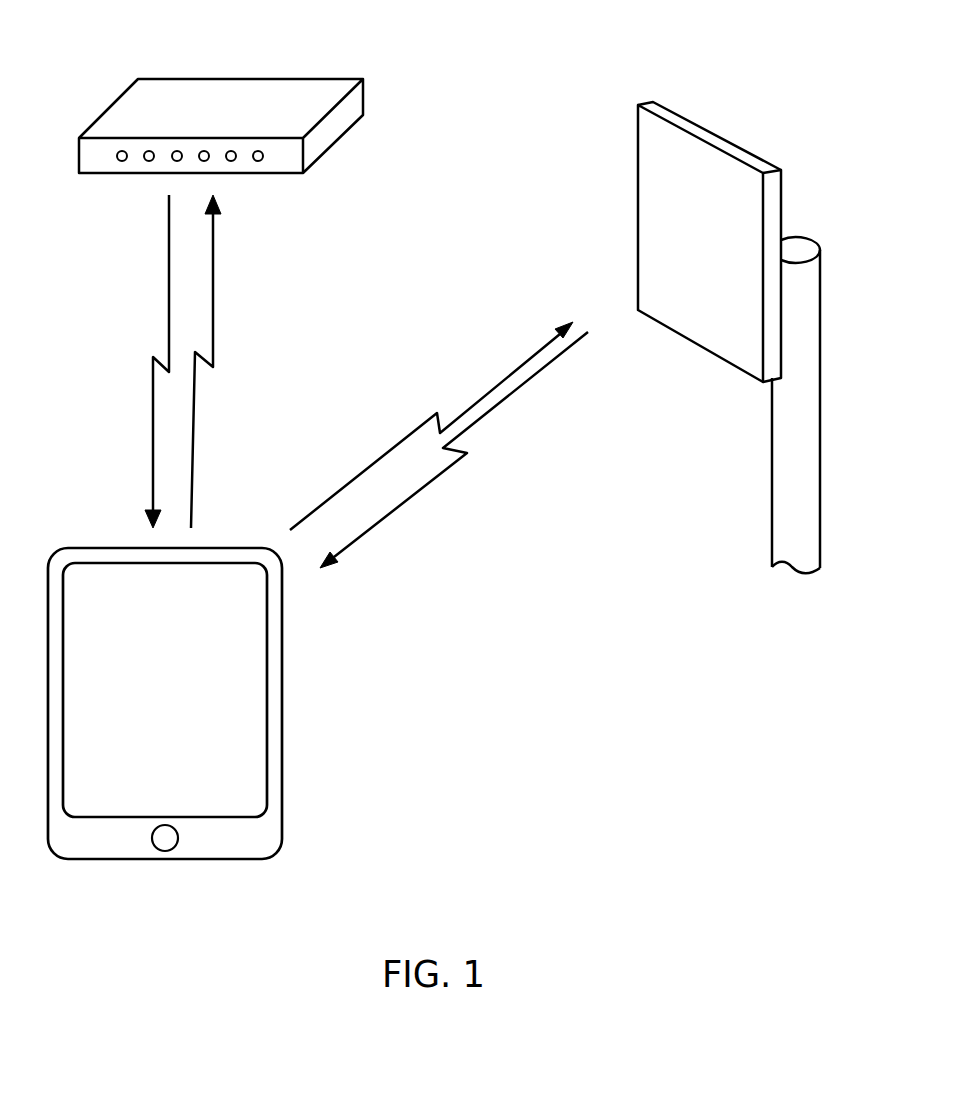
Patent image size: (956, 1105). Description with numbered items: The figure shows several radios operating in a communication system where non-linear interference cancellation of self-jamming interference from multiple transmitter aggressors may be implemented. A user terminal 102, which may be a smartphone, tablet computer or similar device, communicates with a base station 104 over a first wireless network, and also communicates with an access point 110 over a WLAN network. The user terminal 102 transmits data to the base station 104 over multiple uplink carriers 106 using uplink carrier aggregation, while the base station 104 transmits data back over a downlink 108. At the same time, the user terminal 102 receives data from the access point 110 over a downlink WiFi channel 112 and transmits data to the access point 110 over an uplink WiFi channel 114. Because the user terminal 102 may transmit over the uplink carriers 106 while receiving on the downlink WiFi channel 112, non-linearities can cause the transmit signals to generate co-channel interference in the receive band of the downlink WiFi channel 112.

The user terminal 102 is at (165, 860).
The base station 104 is at (708, 130).
The uplink carriers 106 is at (493, 387).
The downlink 108 is at (518, 393).
The access point 110 is at (267, 80).
The downlink WiFi channel 112 is at (168, 287).
The uplink WiFi channel 114 is at (212, 277).